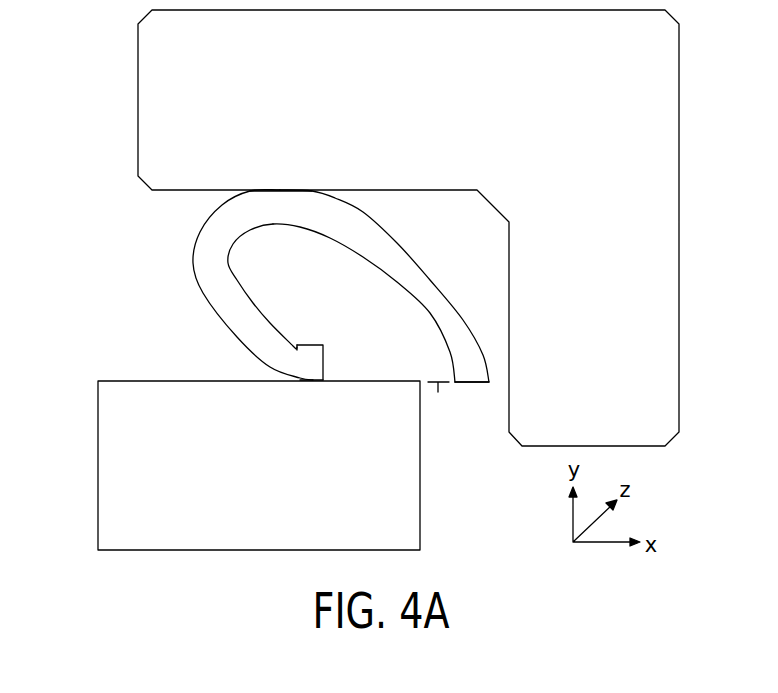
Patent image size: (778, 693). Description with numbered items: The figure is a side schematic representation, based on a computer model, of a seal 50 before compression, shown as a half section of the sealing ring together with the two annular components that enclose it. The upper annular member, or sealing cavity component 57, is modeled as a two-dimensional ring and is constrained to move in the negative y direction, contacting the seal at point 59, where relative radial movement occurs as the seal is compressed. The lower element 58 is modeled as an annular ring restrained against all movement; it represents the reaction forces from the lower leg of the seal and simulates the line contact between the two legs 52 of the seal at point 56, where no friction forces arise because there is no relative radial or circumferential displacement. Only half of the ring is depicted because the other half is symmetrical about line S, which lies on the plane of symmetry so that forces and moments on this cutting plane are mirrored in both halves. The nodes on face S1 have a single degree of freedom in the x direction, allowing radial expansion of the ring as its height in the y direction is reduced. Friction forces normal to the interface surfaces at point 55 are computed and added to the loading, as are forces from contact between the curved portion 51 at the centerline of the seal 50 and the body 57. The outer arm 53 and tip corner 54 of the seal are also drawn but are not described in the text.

The seal 50 is at (289, 317).
The curved portion 51 is at (395, 240).
The legs 52 is at (263, 333).
The second arm of curved spring contact 53 is at (198, 228).
The corner of contact tip 54 is at (297, 350).
The point 55 is at (313, 363).
The point 56 is at (310, 383).
The component 57 is at (150, 100).
The lower element 58 is at (110, 468).
The point 59 is at (279, 190).
The line S is at (438, 402).
The face S1 is at (469, 384).